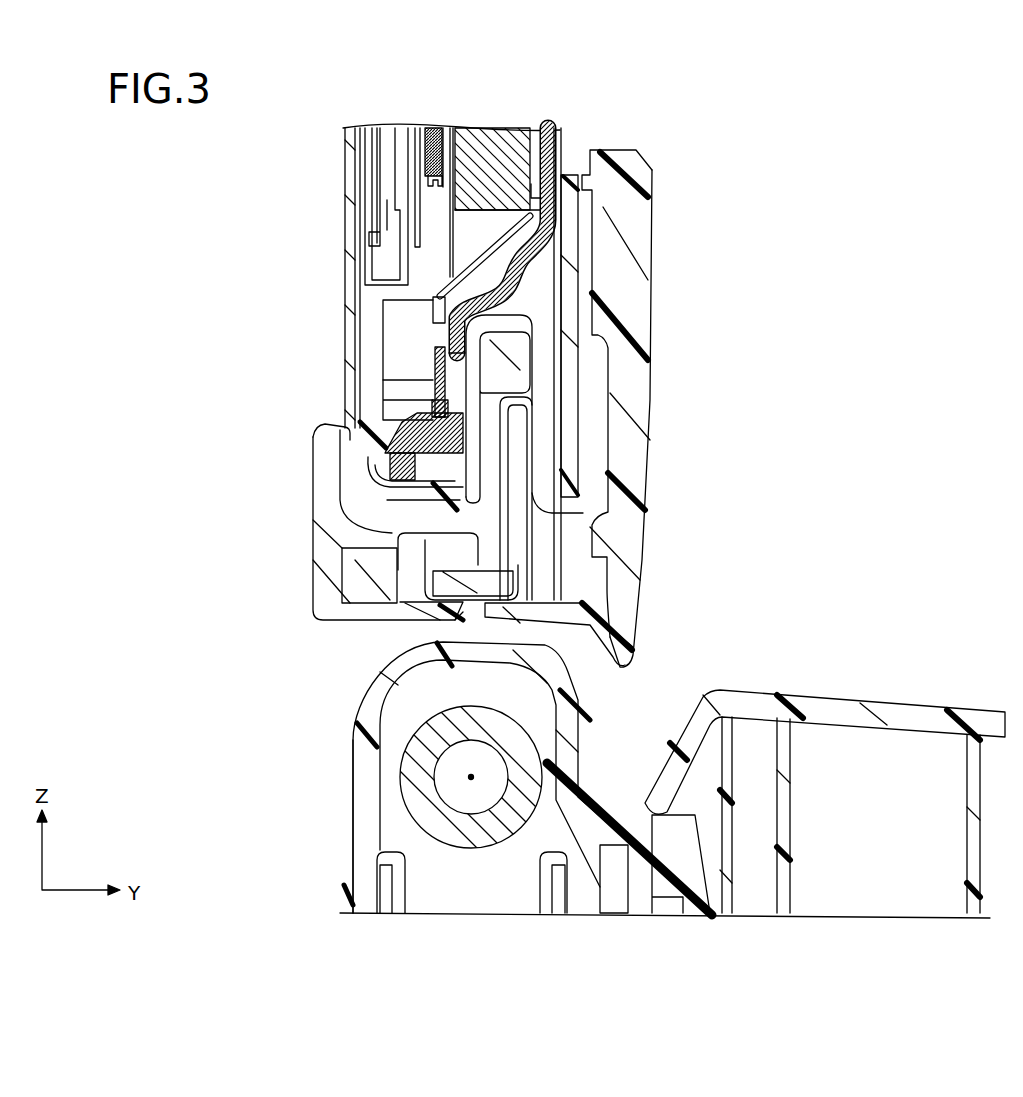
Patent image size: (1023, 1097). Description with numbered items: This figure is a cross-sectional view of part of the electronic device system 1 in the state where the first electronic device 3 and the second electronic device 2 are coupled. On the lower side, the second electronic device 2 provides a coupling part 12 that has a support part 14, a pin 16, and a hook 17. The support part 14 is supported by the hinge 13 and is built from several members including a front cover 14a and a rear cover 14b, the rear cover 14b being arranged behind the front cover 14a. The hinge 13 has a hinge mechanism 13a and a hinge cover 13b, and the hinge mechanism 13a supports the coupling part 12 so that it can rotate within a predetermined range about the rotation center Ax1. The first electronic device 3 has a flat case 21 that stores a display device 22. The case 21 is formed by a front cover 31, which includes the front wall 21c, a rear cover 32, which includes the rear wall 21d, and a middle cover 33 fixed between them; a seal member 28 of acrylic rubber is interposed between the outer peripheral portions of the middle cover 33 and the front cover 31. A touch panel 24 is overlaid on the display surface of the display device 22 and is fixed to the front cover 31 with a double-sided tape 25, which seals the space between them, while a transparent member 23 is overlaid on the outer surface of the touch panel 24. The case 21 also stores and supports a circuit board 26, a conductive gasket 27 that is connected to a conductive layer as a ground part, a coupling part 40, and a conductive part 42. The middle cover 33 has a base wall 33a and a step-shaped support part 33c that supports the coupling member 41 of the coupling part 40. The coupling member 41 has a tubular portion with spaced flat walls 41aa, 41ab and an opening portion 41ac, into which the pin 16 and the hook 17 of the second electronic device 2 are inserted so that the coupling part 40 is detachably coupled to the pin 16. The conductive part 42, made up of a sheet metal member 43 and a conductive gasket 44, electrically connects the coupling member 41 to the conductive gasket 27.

The electronic device system 1 is at (736, 120).
The second electronic device 2 is at (342, 887).
The first electronic device 3 is at (578, 121).
The coupling part 12 is at (290, 528).
The hinge 13 is at (294, 826).
The hinge mechanism 13a is at (399, 752).
The hinge cover 13b is at (372, 800).
The support part 14 is at (290, 528).
The front cover 14a is at (322, 573).
The rear cover 14b is at (636, 468).
The pin 16 is at (515, 572).
The hook 17 is at (505, 606).
The case 21 is at (287, 473).
The front wall 21c is at (287, 473).
The rear wall 21d is at (662, 336).
The display device 22 is at (380, 198).
The transparent member 23 is at (350, 238).
The touch panel 24 is at (400, 303).
The double-sided tape 25 is at (395, 352).
The circuit board 26 is at (465, 235).
The conductive gasket 27 is at (475, 140).
The seal member 28 is at (352, 432).
The front cover 31 is at (345, 440).
The rear cover 32 is at (572, 397).
The middle cover 33 is at (606, 213).
The base wall 33a is at (606, 213).
The support part 33c is at (545, 133).
The coupling part 40 is at (639, 364).
The coupling member 41 is at (639, 364).
The wall 41aa is at (560, 320).
The wall 41ab is at (455, 492).
The opening portion 41ac is at (550, 522).
The conductive part 42 is at (368, 269).
The sheet metal member 43 is at (425, 305).
The conductive gasket 44 is at (447, 388).
The rotation center Ax1 is at (470, 777).